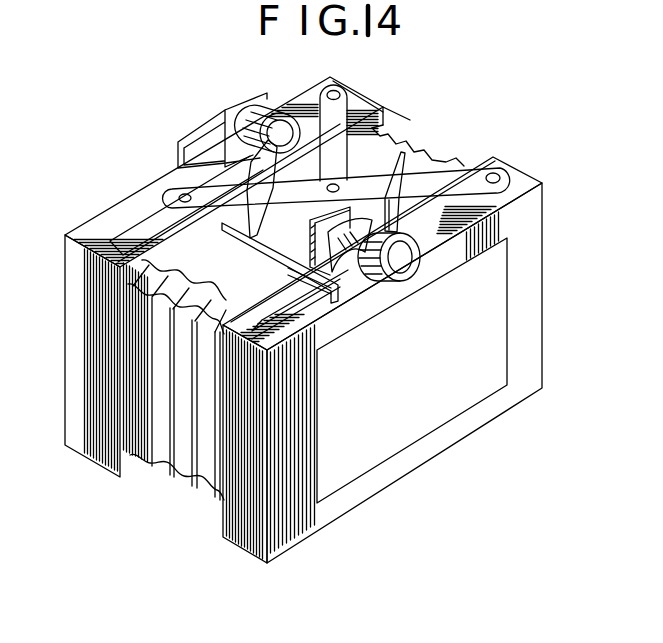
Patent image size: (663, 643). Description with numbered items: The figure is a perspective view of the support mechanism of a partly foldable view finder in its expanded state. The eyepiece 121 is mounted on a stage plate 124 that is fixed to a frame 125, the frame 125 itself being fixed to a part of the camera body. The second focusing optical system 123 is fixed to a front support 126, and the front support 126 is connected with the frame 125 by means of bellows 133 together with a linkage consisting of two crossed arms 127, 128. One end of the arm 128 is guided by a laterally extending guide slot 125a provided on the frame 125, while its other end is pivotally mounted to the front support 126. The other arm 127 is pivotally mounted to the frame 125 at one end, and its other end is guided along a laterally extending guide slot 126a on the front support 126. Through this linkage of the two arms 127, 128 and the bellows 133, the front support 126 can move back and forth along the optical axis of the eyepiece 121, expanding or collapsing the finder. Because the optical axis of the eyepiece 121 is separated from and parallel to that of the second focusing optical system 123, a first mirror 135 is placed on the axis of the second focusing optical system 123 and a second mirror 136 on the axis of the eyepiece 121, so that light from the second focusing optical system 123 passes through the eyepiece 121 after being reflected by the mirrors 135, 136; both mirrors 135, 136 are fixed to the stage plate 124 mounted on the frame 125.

The eyepiece 121 is at (382, 280).
The second focusing optical system 123 is at (274, 104).
The stage plate 124 is at (246, 232).
The frame 125 is at (530, 222).
The guide slot 125a is at (302, 302).
The front support 126 is at (88, 234).
The guide slot 126a is at (142, 220).
The arm 127 is at (424, 178).
The arm 128 is at (340, 142).
The bellows 133 is at (170, 474).
The first mirror 135 is at (408, 245).
The second mirror 136 is at (268, 194).